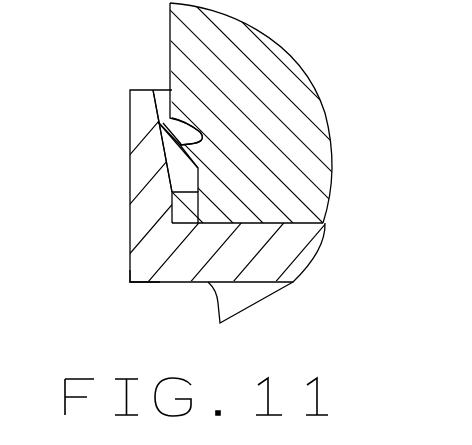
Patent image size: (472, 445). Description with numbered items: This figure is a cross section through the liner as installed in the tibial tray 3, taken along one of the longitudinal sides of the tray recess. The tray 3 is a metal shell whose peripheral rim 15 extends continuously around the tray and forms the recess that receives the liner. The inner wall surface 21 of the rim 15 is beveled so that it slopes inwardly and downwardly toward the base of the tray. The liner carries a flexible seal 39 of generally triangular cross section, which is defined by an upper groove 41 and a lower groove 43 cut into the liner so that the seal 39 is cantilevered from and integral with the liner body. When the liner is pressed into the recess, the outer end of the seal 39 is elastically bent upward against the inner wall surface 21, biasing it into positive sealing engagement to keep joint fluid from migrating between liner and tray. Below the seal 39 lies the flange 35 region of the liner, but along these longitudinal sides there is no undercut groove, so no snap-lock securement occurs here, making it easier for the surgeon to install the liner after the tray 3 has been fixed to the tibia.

The tibial tray 3 is at (126, 293).
The peripheral rim 15 is at (126, 230).
The inner wall surface 21 is at (172, 66).
The flange 35 is at (187, 199).
The flexible seal 39 is at (160, 121).
The upper groove 41 is at (184, 124).
The lower groove 43 is at (188, 168).